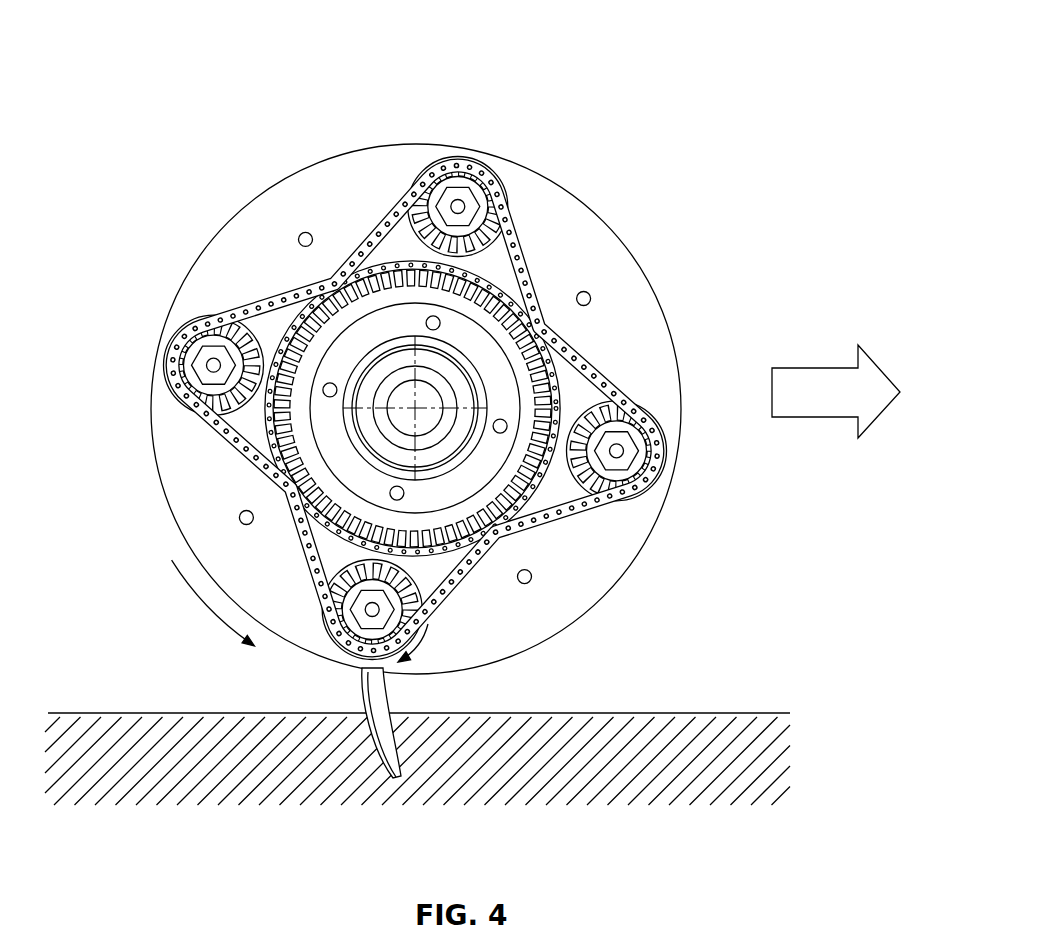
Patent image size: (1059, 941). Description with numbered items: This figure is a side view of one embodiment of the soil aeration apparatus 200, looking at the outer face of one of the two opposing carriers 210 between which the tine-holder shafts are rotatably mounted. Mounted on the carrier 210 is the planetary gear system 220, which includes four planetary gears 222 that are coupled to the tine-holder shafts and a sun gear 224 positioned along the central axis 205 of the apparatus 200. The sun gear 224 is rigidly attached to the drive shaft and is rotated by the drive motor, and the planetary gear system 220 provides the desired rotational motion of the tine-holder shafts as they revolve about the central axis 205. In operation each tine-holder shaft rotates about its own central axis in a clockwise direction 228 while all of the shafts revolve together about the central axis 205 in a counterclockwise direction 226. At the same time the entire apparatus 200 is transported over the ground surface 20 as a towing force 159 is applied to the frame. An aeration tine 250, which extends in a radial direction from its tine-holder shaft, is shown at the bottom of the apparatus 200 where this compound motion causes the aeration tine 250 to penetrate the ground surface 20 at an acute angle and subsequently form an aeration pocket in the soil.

The soil aeration apparatus 200 is at (417, 425).
The carrier 210 is at (225, 239).
The central axis 205 is at (423, 412).
The planetary gear system 220 is at (415, 409).
The planetary gear 222 is at (466, 182).
The sun gear 224 is at (415, 409).
The counterclockwise direction 226 is at (205, 600).
The clockwise direction 228 is at (420, 642).
The aeration tine 250 is at (375, 712).
The ground surface 20 is at (708, 713).
The towing force 159 is at (820, 375).